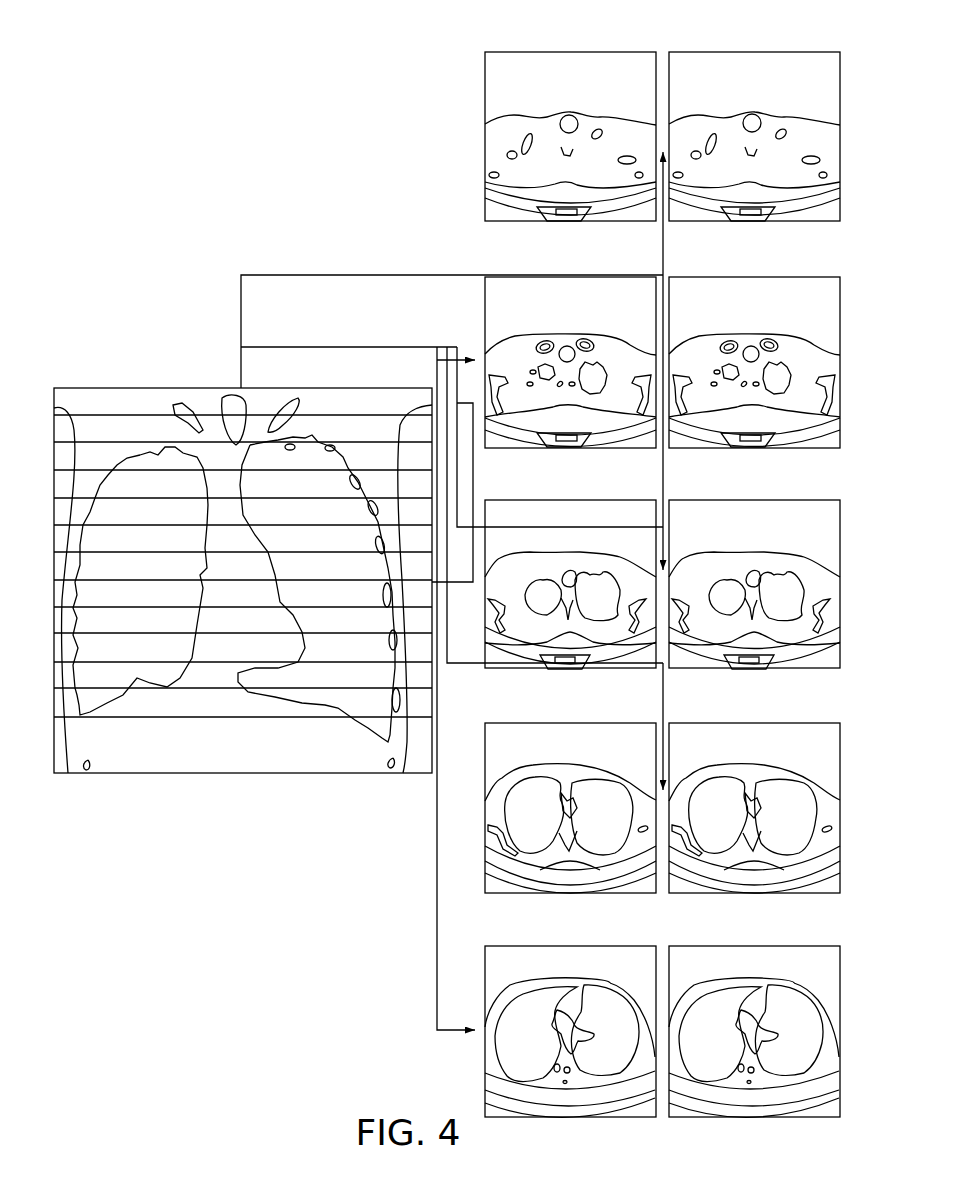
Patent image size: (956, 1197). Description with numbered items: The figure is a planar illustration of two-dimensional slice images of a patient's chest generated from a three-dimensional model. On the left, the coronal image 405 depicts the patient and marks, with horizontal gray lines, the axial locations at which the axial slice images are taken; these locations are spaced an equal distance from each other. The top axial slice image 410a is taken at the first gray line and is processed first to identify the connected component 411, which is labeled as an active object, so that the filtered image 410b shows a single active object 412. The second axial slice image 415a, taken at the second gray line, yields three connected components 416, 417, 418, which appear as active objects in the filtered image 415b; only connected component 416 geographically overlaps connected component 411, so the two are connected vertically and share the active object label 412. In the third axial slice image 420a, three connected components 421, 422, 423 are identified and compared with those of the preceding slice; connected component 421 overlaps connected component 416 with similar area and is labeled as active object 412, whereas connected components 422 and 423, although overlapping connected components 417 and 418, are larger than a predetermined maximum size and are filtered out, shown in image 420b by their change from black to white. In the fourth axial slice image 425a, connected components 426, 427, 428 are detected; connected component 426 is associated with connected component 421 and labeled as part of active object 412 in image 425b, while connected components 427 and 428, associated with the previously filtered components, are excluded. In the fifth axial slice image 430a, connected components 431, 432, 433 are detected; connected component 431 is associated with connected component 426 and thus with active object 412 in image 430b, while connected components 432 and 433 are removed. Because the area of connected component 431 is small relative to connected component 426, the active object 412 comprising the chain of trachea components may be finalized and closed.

The coronal image 405 is at (148, 368).
The top axial 2D slice image 410a is at (490, 44).
The filtered image 410b is at (812, 46).
The connected component 411 is at (570, 112).
The active object 412 is at (753, 110).
The second axial 2D slice image 415a is at (487, 270).
The filtered second slice image 415b is at (832, 273).
The connected component 416 is at (556, 342).
The connected component 417 is at (650, 350).
The connected component 418 is at (601, 357).
The third axial 2D slice image 420a is at (546, 497).
The filtered third slice image 420b is at (829, 496).
The connected component 421 is at (576, 566).
The connected component 422 is at (549, 570).
The connected component 423 is at (613, 572).
The fourth axial 2D slice image 425a is at (540, 719).
The filtered fourth slice image 425b is at (829, 719).
The connected component 426 is at (564, 794).
The connected component 427 is at (646, 796).
The connected component 428 is at (617, 776).
The fifth axial 2D slice image 430a is at (537, 944).
The filtered fifth slice image 430b is at (827, 944).
The connected component 431 is at (567, 1025).
The connected component 432 is at (649, 1020).
The connected component 433 is at (616, 985).